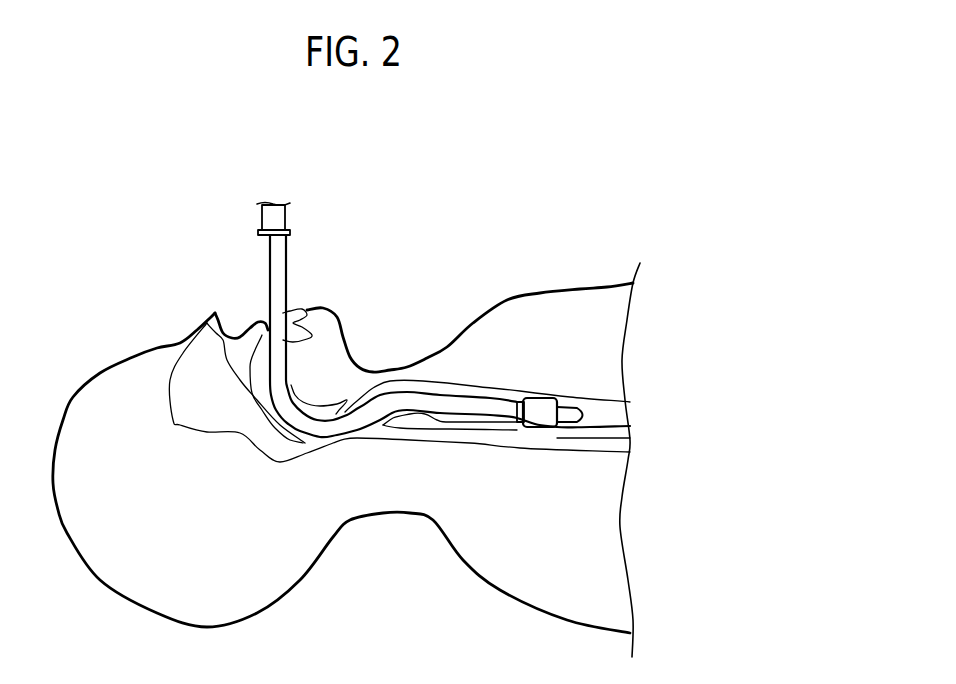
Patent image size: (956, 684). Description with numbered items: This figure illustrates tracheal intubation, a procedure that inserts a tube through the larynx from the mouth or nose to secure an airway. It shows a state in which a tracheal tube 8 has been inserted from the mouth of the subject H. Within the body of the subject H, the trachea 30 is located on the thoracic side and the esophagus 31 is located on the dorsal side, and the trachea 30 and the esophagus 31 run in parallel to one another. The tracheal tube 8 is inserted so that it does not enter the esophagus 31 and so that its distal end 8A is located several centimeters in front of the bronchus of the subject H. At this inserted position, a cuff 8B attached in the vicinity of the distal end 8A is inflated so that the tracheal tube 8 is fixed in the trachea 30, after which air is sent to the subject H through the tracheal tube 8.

The subject H is at (98, 380).
The tracheal tube 8 is at (286, 265).
The distal end 8A is at (580, 410).
The cuff 8B is at (540, 402).
The trachea 30 is at (390, 387).
The esophagus 31 is at (418, 440).